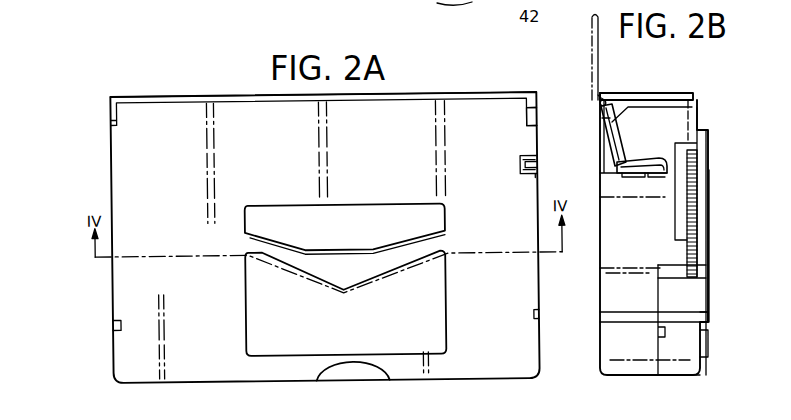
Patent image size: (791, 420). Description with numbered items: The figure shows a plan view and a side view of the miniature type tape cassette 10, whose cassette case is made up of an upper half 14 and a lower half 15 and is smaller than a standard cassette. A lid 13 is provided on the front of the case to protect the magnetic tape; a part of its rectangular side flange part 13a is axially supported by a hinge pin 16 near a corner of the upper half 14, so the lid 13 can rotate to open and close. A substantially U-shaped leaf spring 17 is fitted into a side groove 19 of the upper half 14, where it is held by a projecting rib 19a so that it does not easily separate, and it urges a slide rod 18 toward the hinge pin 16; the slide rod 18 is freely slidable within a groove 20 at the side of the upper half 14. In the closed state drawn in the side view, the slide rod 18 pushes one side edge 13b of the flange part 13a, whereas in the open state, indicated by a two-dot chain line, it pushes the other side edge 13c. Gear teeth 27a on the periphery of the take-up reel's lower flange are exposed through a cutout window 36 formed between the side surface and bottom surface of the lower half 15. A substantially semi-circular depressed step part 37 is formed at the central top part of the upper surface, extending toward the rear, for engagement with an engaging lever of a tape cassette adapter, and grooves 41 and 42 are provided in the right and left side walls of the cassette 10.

In FIG. 2A, the miniature type tape cassette 10 is at (233, 86).
In FIG. 2B, the miniature type tape cassette 10 is at (705, 80).
In FIG. 2A, the lid 13 is at (164, 95).
In FIG. 2B, the lid 13 is at (591, 42).
In FIG. 2B, the side flange part 13a is at (605, 92).
In FIG. 2B, the side edge 13b is at (604, 122).
In FIG. 2B, the side edge 13c is at (600, 100).
In FIG. 2A, the upper half 14 is at (241, 381).
In FIG. 2B, the upper half 14 is at (624, 376).
In FIG. 2B, the lower half 15 is at (686, 376).
In FIG. 2B, the hinge pin 16 is at (598, 104).
In FIG. 2A, the leaf spring 17 is at (523, 168).
In FIG. 2B, the leaf spring 17 is at (632, 176).
In FIG. 2A, the slide rod 18 is at (527, 120).
In FIG. 2B, the slide rod 18 is at (612, 148).
In FIG. 2A, the side groove 19 is at (521, 157).
In FIG. 2B, the side groove 19 is at (608, 165).
In FIG. 2A, the projecting rib 19a is at (536, 180).
In FIG. 2B, the projecting rib 19a is at (653, 178).
In FIG. 2B, the groove 20 is at (620, 137).
In FIG. 2B, the gear teeth 27a is at (692, 207).
In FIG. 2B, the cutout window 36 is at (700, 266).
In FIG. 2A, the depressed step part 37 is at (354, 371).
In FIG. 2A, the groove 41 is at (540, 316).
In FIG. 2B, the groove 41 is at (708, 316).
In FIG. 2A, the groove 42 is at (112, 322).